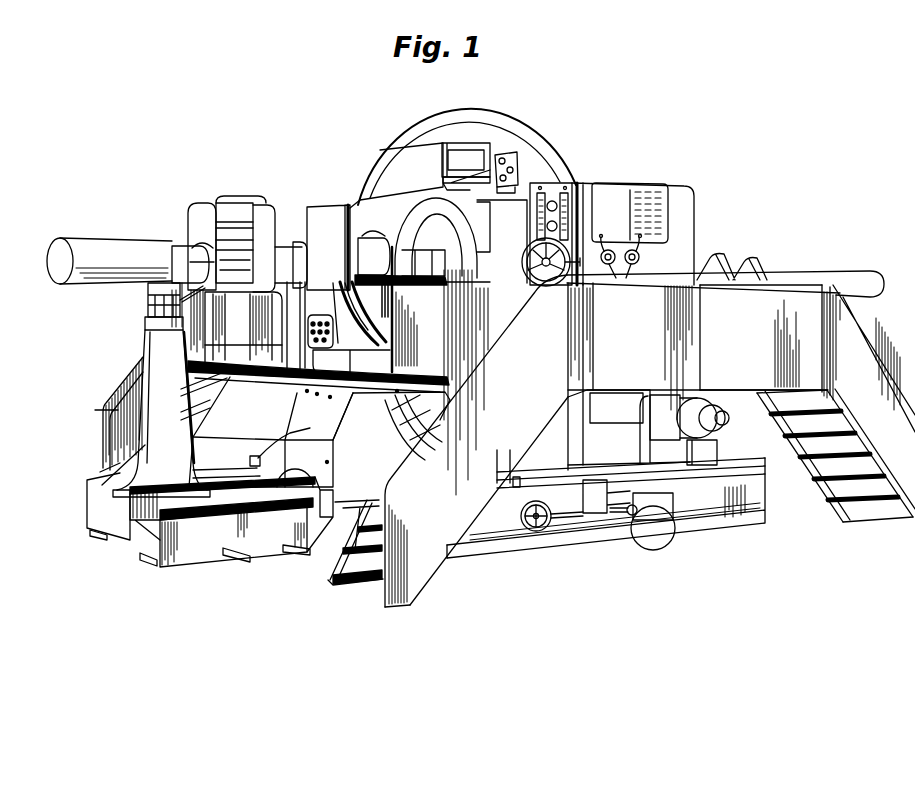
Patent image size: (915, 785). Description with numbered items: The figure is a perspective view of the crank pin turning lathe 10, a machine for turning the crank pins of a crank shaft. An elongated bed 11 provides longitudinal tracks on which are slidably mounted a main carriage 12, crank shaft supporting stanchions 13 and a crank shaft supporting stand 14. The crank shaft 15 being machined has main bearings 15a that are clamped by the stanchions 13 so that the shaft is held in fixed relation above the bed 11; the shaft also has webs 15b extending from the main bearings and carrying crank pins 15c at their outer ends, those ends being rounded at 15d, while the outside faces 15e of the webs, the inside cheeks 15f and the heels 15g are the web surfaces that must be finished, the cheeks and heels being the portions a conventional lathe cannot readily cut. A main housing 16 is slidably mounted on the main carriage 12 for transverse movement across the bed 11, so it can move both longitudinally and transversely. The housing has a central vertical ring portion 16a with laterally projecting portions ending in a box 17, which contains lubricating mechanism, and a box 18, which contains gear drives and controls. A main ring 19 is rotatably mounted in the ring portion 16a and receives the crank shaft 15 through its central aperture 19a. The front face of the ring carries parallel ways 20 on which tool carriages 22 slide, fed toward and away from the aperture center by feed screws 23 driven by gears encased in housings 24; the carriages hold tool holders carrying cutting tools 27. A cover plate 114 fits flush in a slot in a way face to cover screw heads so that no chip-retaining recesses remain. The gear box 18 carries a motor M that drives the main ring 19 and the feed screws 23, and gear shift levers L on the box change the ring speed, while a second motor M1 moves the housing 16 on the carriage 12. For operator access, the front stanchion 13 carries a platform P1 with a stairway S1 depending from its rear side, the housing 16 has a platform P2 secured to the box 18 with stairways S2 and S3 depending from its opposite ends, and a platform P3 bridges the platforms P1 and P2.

The crank pin turning lathe 10 is at (550, 140).
The elongated bed 11 is at (210, 545).
The main carriage 12 is at (514, 505).
The crank shaft supporting stanchion 13 is at (305, 428).
The crank shaft supporting stand 14 is at (142, 450).
The crank shaft 15 is at (120, 235).
The main bearings 15a is at (180, 255).
The webs 15b is at (236, 222).
The crank pins 15c is at (262, 230).
The rounded outer ends 15d is at (264, 206).
The outside faces of the webs 15e is at (196, 230).
The inside cheeks 15f is at (212, 296).
The heels 15g is at (210, 310).
The main housing 16 is at (578, 538).
The central vertical ring portion 16a is at (512, 132).
The box 17 is at (349, 204).
The box 18 is at (640, 195).
The main ring 19 is at (466, 198).
The central aperture 19a is at (484, 241).
The parallel ways 20 is at (456, 143).
The tool carriages 22 is at (403, 160).
The feed screws 23 is at (445, 180).
The housings 24 is at (500, 157).
The cutting tools 27 is at (532, 270).
The cover plate 114 is at (472, 158).
The gear shift levers L is at (625, 276).
The motor M is at (728, 420).
The second motor M1 is at (677, 540).
The platform P1 is at (261, 378).
The platform P2 is at (737, 372).
The platform P3 is at (420, 386).
The stairway S1 is at (96, 411).
The stairway S2 is at (410, 585).
The stairway S3 is at (868, 520).